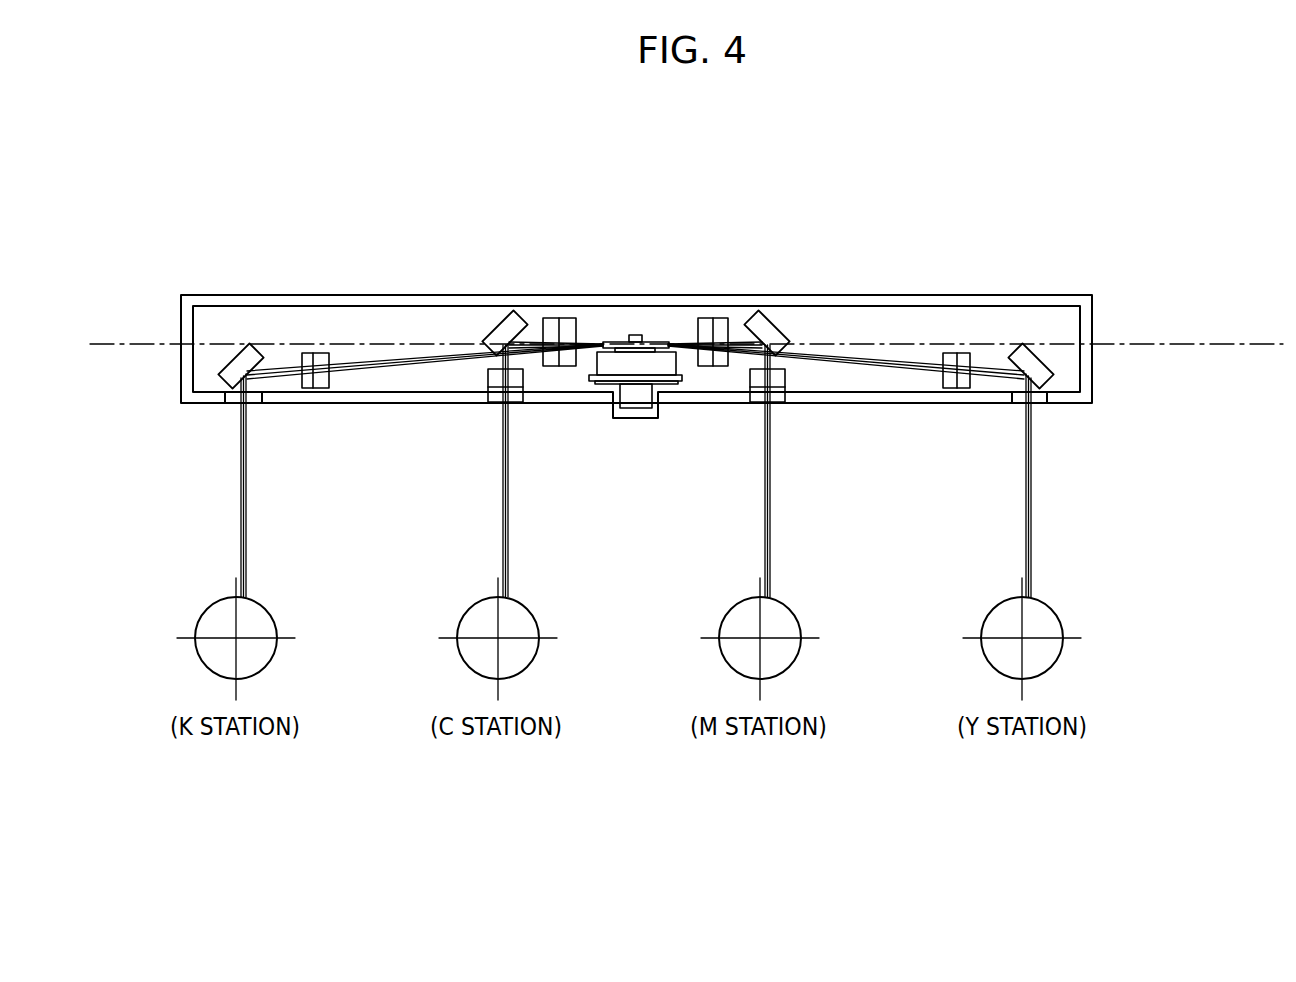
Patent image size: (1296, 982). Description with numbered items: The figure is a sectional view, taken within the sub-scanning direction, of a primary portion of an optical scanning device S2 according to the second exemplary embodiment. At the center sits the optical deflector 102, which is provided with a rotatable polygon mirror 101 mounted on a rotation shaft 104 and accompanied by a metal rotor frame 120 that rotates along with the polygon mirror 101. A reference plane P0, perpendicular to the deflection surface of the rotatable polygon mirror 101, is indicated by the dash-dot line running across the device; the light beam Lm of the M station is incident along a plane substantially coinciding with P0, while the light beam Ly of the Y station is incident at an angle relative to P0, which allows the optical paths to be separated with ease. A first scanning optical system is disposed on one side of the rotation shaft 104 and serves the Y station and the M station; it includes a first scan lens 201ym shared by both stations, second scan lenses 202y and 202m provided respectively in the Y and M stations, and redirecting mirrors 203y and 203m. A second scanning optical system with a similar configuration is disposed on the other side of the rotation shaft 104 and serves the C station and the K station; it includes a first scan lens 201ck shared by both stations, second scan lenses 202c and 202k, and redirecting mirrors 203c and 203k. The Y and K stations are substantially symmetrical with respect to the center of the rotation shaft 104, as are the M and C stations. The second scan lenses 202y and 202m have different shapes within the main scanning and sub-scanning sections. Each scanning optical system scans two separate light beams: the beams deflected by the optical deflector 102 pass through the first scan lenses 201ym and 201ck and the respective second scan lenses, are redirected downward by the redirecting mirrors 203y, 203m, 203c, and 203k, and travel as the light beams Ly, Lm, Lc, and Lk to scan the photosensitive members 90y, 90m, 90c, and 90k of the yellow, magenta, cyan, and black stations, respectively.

The optical scanning device S2 is at (1105, 319).
The plane perpendicular to the deflection surface P0 is at (1260, 343).
The rotatable polygon mirror 101 is at (657, 337).
The rotation shaft 104 is at (633, 335).
The rotor frame 120 is at (612, 368).
The optical deflector 102 is at (638, 397).
The first scan lens 201ck is at (555, 360).
The first scan lens 201ym is at (718, 358).
The second scan lens 202k is at (322, 382).
The second scan lens 202c is at (495, 383).
The second scan lens 202m is at (777, 381).
The second scan lens 202y is at (953, 382).
The redirecting mirror 203k is at (226, 372).
The redirecting mirror 203c is at (506, 331).
The redirecting mirror 203m is at (770, 331).
The redirecting mirror 203y is at (1046, 372).
The light beam Lk is at (246, 496).
The light beam Lc is at (508, 496).
The light beam Lm is at (770, 496).
The light beam Ly is at (1032, 496).
The photosensitive member 90k is at (257, 617).
The photosensitive member 90c is at (519, 617).
The photosensitive member 90m is at (781, 617).
The photosensitive member 90y is at (1043, 617).